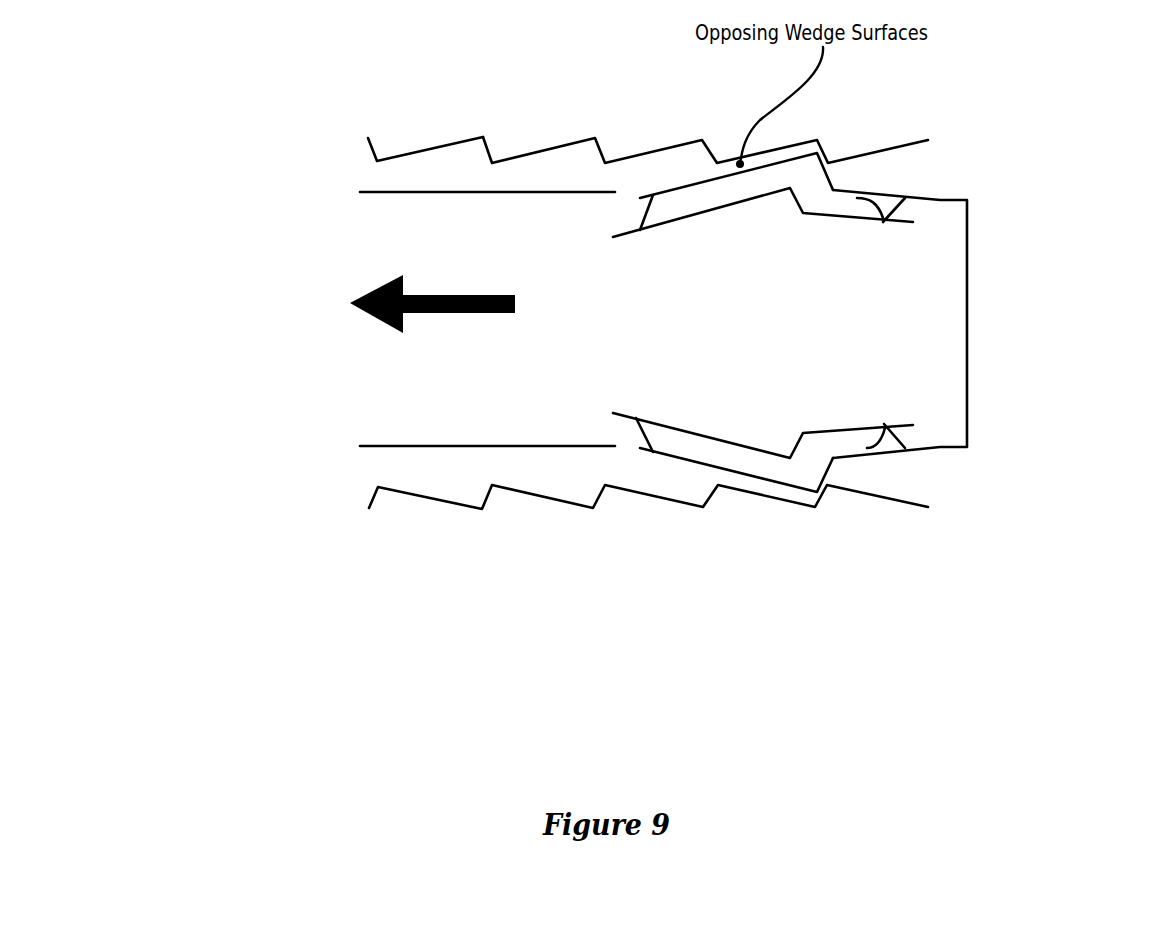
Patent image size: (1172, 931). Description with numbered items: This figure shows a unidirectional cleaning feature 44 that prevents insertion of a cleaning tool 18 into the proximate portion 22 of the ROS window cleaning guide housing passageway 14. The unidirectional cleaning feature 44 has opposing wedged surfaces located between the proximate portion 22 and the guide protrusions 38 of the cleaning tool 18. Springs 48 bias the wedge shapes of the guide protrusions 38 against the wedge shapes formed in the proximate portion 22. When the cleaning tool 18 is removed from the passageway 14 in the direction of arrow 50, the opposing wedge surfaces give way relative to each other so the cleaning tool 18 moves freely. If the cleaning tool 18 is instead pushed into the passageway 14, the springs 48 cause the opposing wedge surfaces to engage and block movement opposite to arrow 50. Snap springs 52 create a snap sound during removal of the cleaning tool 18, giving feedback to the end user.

The cleaning guide housing passageway 14 is at (364, 175).
The cleaning tool 18 is at (338, 414).
The proximate portion 22 is at (352, 150).
The guide protrusions 38 is at (782, 286).
The unidirectional cleaning feature 44 is at (884, 174).
The springs 48 is at (640, 233).
The arrow 50 is at (398, 315).
The snap springs 52 is at (884, 219).